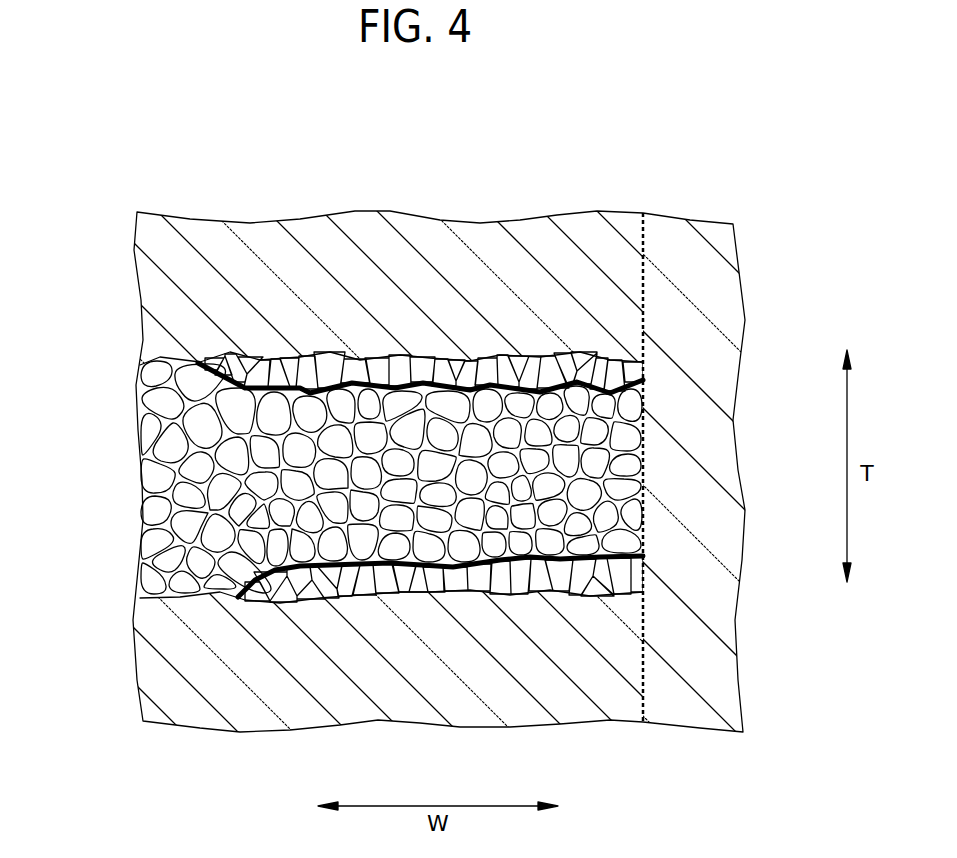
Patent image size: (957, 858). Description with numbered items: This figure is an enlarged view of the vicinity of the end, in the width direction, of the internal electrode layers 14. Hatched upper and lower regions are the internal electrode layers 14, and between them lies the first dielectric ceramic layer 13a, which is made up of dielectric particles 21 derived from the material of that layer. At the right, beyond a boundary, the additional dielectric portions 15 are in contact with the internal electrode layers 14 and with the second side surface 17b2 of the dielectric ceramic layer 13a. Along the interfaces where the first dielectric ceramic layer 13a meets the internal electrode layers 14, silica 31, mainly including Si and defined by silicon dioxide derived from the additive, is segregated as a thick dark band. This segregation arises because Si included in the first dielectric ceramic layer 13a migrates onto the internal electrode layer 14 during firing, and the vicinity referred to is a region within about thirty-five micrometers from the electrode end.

The internal electrode layers 14 is at (345, 258).
The additional dielectric portions 15 is at (707, 372).
The second side surface 17b2 is at (643, 632).
The first dielectric ceramic layer 13a is at (223, 480).
The dielectric particles 21 is at (168, 443).
The silica 31 is at (437, 363).